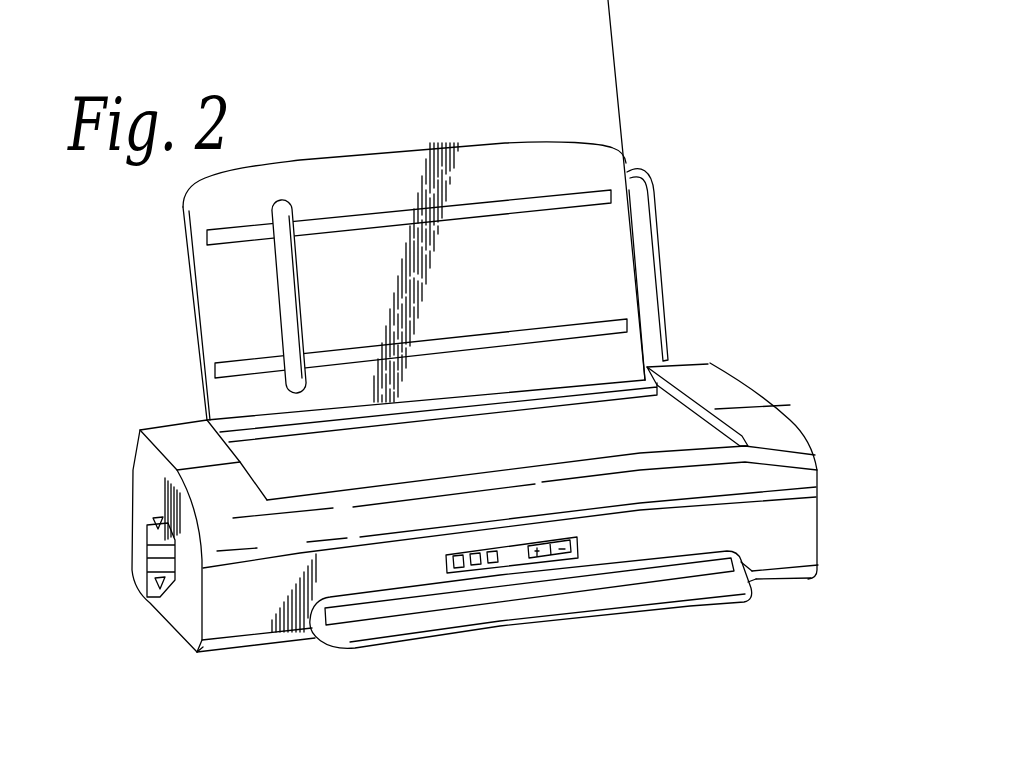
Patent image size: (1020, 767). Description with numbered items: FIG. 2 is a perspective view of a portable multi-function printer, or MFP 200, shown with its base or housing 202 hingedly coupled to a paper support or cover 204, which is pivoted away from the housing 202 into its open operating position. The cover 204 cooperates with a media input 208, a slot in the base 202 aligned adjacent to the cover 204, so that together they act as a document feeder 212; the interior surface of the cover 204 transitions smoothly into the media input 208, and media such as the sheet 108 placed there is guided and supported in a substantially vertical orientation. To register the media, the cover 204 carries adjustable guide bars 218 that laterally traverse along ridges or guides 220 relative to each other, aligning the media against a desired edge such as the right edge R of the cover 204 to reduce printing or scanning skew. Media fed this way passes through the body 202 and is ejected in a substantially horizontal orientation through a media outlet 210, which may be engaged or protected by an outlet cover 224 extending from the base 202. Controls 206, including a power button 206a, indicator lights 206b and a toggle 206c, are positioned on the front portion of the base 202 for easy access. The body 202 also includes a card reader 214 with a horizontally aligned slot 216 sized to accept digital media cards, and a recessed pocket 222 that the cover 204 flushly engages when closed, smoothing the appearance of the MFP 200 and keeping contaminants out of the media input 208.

The media sheet 108 is at (232, 14).
The right edge R is at (615, 72).
The MFP 200 is at (838, 180).
The base 202 is at (856, 446).
The cover 204 is at (610, 211).
The controls 206 is at (612, 546).
The power button 206a is at (457, 554).
The indicator lights 206b is at (475, 552).
The toggle 206c is at (492, 550).
The media input 208 is at (628, 378).
The media outlet 210 is at (718, 568).
The document feeder 212 is at (680, 284).
The card reader 214 is at (108, 548).
The slot 216 is at (160, 600).
The guide bars 218 is at (298, 297).
The guides 220 is at (450, 225).
The pocket 222 is at (682, 411).
The outlet cover 224 is at (470, 620).